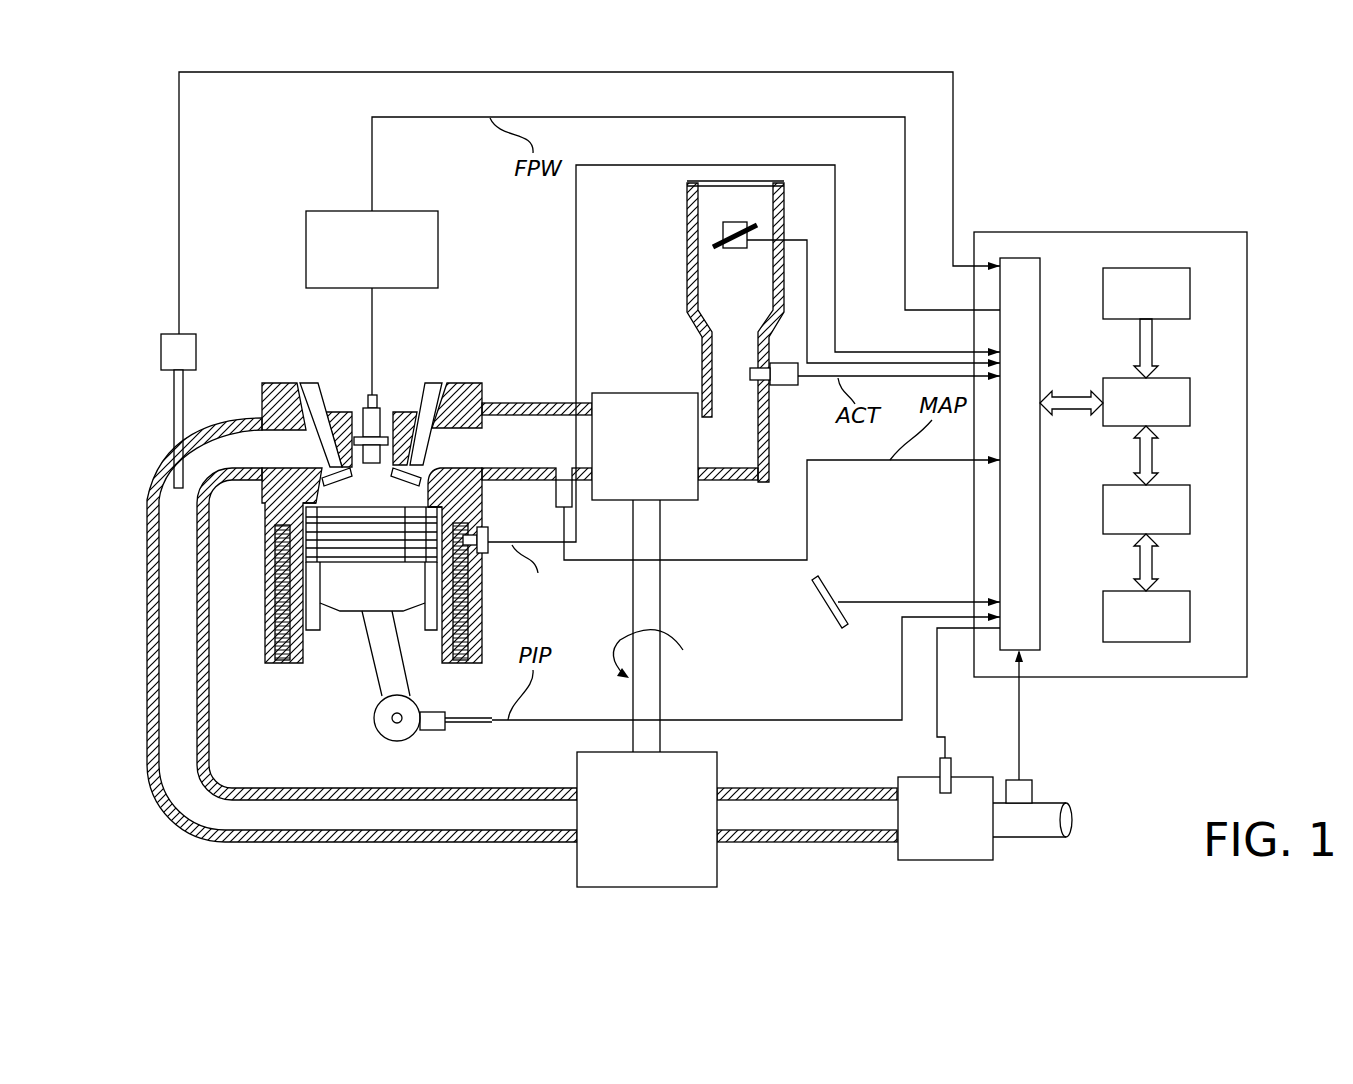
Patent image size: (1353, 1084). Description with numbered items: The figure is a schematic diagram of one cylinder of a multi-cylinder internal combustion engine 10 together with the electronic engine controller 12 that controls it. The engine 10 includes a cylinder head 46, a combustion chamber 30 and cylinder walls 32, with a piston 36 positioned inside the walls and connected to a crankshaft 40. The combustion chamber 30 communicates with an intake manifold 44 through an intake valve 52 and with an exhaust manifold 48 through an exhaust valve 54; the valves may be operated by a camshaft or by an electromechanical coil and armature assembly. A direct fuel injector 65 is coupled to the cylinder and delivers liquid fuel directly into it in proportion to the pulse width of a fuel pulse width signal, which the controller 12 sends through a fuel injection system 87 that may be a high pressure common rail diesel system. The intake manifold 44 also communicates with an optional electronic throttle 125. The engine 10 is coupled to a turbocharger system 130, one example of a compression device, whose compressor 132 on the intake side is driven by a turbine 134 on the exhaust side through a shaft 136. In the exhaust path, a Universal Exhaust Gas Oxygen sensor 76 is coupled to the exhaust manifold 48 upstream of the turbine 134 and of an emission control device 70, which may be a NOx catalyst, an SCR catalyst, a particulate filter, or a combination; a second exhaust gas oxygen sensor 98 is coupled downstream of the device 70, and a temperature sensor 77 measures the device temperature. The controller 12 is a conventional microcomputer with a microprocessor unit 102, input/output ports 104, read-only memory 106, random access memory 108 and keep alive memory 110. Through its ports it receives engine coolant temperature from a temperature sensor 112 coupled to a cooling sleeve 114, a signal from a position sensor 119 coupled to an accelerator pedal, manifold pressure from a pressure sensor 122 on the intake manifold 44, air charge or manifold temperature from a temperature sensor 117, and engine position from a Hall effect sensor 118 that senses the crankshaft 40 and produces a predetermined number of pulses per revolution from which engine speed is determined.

The internal combustion engine 10 is at (605, 467).
The electronic engine controller 12 is at (1110, 415).
The combustion chamber 30 is at (373, 478).
The cylinder walls 32 is at (305, 652).
The piston 36 is at (375, 583).
The crankshaft 40 is at (392, 722).
The intake manifold 44 is at (512, 403).
The cylinder head 46 is at (462, 383).
The exhaust manifold 48 is at (147, 522).
The intake valve 52 is at (425, 460).
The exhaust valve 54 is at (327, 460).
The direct fuel injector 65 is at (368, 388).
The emission control device 70 is at (968, 862).
The Universal Exhaust Gas Oxygen (UEGO) sensor 76 is at (181, 334).
The temperature sensor 77 is at (952, 758).
The fuel injection system 87 is at (390, 211).
The second exhaust gas oxygen sensor 98 is at (1033, 793).
The microprocessor unit 102 is at (1162, 378).
The input/output ports 104 is at (1042, 323).
The read-only memory 106 is at (1160, 268).
The random access memory 108 is at (1162, 485).
The keep alive memory 110 is at (1162, 591).
The temperature sensor 112 is at (492, 535).
The cooling sleeve 114 is at (280, 668).
The temperature sensor 117 is at (797, 390).
The Hall effect sensor 118 is at (432, 710).
The position sensor 119 is at (824, 621).
The pressure sensor 122 is at (556, 495).
The electronic throttle 125 is at (716, 220).
The turbocharger system 130 is at (684, 727).
The compressor 132 is at (645, 446).
The turbine 134 is at (647, 819).
The shaft 136 is at (652, 618).